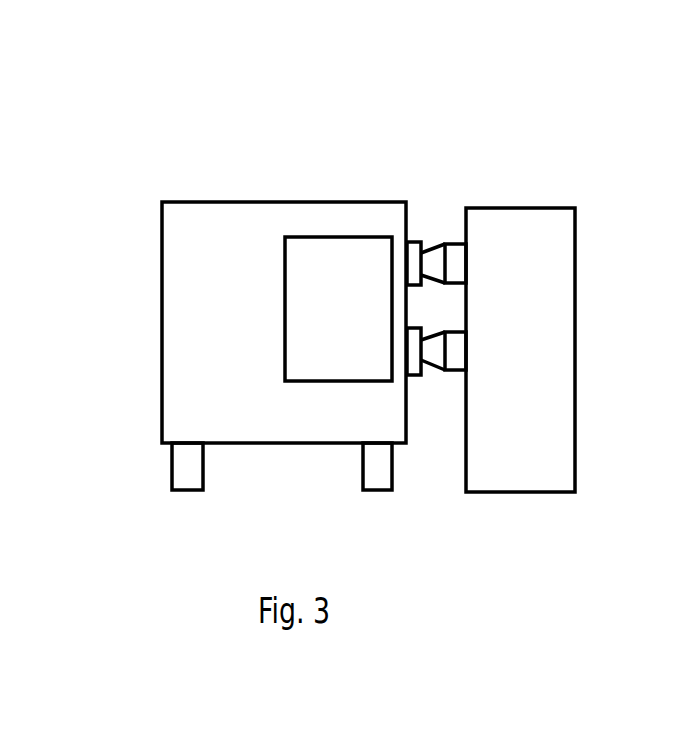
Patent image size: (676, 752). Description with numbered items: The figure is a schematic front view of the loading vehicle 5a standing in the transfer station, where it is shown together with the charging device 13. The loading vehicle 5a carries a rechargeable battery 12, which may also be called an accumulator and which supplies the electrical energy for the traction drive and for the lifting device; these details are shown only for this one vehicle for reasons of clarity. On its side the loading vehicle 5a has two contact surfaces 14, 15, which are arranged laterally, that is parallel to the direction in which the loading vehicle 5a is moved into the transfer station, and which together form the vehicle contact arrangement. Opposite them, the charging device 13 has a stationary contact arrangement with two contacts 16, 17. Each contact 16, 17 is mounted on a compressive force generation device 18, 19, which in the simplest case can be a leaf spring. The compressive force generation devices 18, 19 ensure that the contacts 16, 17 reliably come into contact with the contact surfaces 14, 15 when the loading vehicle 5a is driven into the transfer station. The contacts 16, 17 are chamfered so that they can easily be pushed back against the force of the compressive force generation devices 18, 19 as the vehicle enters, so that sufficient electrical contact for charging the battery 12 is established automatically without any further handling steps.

The loading vehicle 5a is at (198, 415).
The rechargeable battery 12 is at (317, 270).
The charging device 13 is at (526, 222).
The contact surface 14 is at (415, 248).
The contact surface 15 is at (420, 375).
The contact 16 is at (434, 258).
The contact 17 is at (440, 377).
The compressive force generation device 18 is at (455, 258).
The compressive force generation device 19 is at (457, 345).